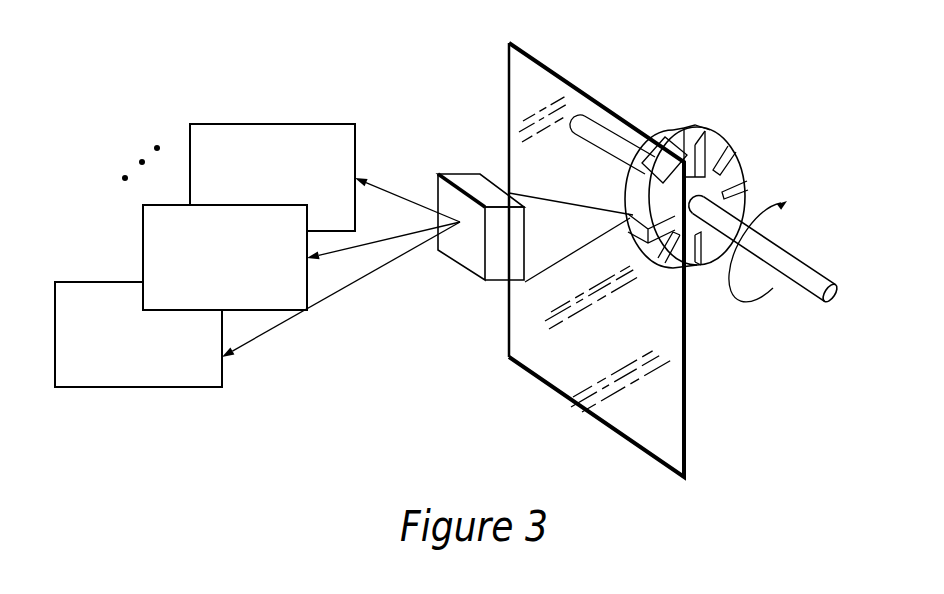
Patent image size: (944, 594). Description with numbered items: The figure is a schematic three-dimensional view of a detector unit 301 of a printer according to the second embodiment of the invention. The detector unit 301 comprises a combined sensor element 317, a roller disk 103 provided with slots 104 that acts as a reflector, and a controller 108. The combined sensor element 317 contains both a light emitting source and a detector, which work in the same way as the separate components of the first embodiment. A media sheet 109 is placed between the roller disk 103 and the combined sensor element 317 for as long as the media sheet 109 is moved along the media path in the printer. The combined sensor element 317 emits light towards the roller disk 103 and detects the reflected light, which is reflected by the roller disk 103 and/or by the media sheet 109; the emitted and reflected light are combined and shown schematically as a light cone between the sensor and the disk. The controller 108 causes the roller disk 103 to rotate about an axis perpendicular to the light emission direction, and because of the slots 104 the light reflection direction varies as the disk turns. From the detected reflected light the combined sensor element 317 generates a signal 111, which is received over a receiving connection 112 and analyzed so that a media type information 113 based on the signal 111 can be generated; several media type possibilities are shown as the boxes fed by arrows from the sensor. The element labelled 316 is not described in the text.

The roller disk 103 is at (728, 185).
The slots 104 is at (699, 265).
The controller 108 is at (812, 265).
The media sheet 109 is at (674, 424).
The signal 111 is at (228, 133).
The receiving connection 112 is at (108, 297).
The media type information 113 is at (154, 231).
The detector unit 301 is at (367, 394).
The sensor 316 is at (475, 281).
The combined sensor element 317 is at (585, 204).